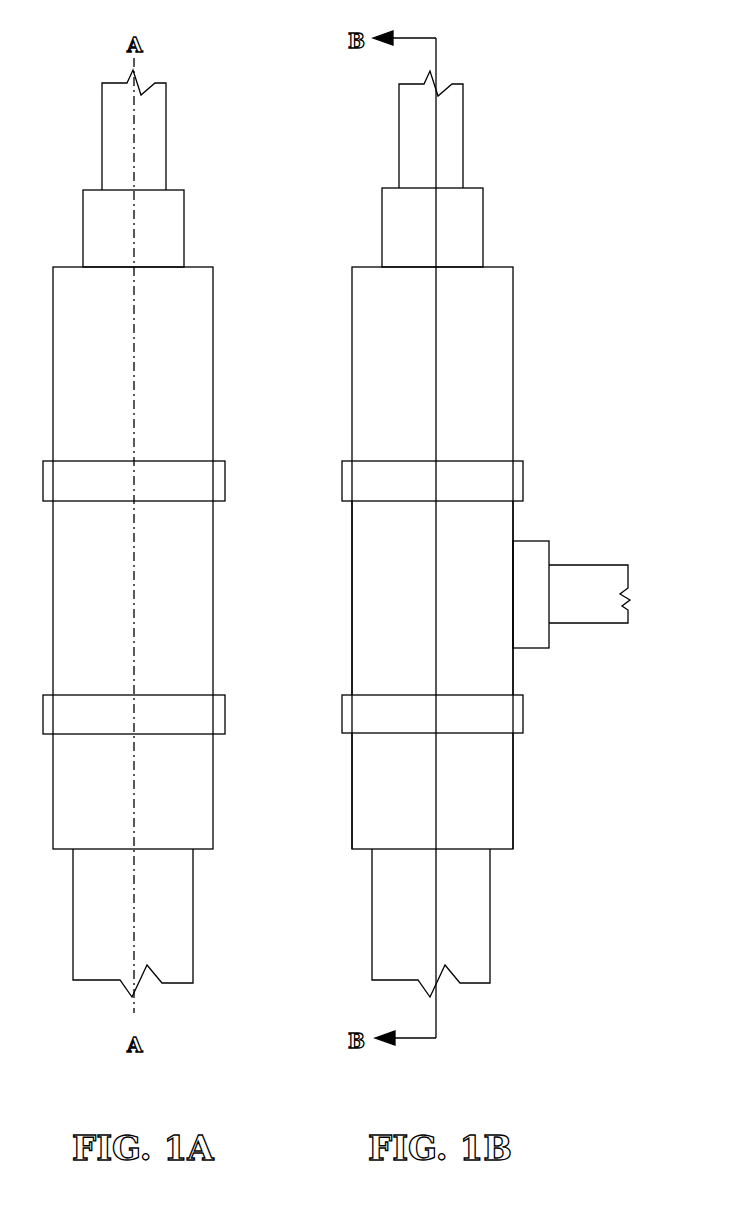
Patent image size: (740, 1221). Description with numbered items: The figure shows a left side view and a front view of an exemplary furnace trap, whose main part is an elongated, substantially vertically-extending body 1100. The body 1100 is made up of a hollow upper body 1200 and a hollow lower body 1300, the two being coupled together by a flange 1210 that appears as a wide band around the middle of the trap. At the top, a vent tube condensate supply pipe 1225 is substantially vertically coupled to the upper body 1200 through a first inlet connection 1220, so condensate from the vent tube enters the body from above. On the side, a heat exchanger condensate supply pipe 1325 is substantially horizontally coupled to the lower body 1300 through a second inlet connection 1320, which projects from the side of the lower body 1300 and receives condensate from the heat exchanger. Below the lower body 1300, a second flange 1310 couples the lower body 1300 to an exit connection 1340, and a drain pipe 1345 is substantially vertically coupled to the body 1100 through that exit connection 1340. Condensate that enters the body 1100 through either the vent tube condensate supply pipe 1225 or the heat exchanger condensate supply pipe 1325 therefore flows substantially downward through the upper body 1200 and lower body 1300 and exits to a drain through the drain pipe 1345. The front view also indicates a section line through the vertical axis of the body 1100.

The body 1100 is at (586, 192).
The vent tube condensate supply pipe 1225 is at (480, 123).
The first inlet connection 1220 is at (503, 237).
The upper body 1200 is at (543, 327).
The flange 1210 is at (551, 477).
The second inlet connection 1320 is at (576, 547).
The heat exchanger condensate supply pipe 1325 is at (611, 647).
The lower body 1300 is at (527, 682).
The flange 1310 is at (537, 727).
The exit connection 1340 is at (543, 838).
The drain pipe 1345 is at (513, 917).